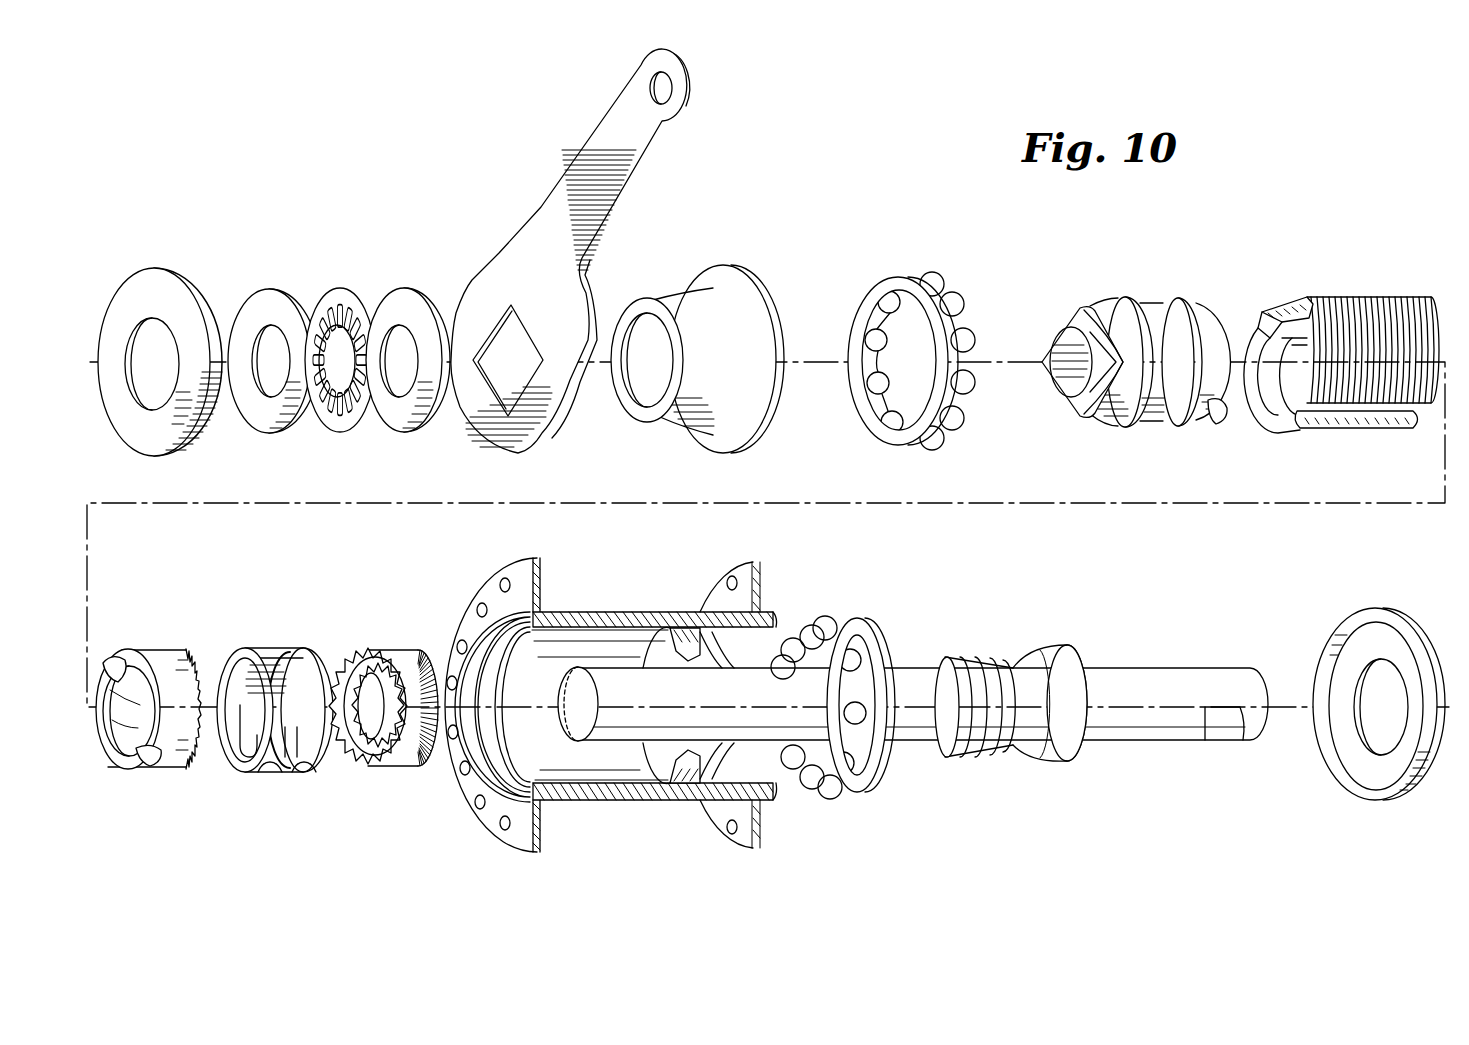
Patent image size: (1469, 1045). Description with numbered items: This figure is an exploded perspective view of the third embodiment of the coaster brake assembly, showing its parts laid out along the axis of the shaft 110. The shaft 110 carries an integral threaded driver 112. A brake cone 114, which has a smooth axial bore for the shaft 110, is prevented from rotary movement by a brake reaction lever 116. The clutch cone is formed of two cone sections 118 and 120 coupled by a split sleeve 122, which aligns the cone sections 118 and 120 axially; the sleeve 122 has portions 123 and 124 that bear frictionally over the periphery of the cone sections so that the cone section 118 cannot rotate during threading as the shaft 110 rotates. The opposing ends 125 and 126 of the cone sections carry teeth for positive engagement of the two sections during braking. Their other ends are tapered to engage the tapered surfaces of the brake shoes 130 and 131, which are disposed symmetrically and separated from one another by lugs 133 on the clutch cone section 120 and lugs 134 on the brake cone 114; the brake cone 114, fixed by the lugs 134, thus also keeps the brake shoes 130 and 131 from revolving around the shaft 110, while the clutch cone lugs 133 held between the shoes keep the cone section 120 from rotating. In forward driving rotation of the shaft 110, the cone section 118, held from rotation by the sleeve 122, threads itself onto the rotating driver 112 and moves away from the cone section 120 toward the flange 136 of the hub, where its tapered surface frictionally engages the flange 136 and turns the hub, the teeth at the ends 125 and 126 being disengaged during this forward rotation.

The shaft 110 is at (1212, 680).
The threaded driver 112 is at (972, 660).
The brake cone 114 is at (1150, 356).
The brake reaction lever 116 is at (545, 212).
The clutch cone section 118 is at (383, 700).
The clutch cone section 120 is at (163, 703).
The split sleeve 122 is at (291, 714).
The portion of sleeve 123 is at (318, 733).
The portion of sleeve 124 is at (282, 735).
The toothed end of cone section 125 is at (343, 653).
The toothed end of cone section 126 is at (182, 653).
The brake shoe 130 is at (1341, 360).
The brake shoe 131 is at (1350, 430).
The clutch cone lugs 133 is at (112, 663).
The lugs 134 is at (1220, 424).
The flange 136 is at (685, 643).